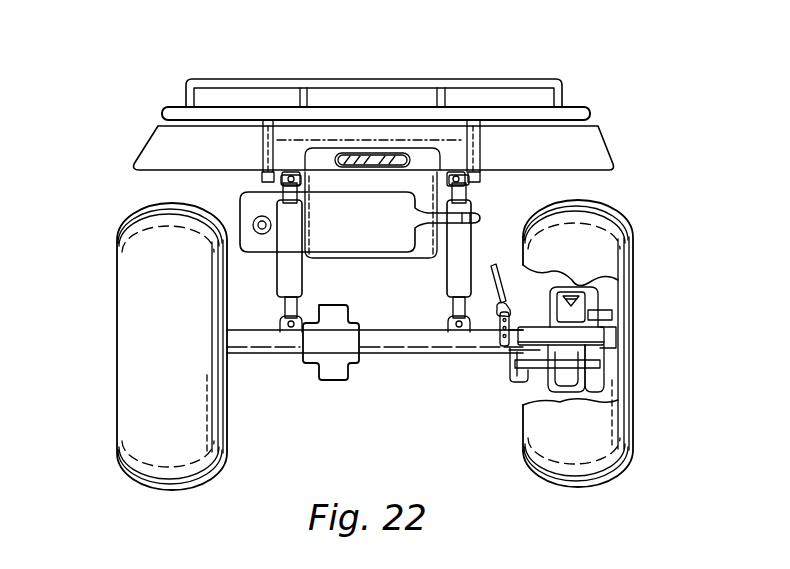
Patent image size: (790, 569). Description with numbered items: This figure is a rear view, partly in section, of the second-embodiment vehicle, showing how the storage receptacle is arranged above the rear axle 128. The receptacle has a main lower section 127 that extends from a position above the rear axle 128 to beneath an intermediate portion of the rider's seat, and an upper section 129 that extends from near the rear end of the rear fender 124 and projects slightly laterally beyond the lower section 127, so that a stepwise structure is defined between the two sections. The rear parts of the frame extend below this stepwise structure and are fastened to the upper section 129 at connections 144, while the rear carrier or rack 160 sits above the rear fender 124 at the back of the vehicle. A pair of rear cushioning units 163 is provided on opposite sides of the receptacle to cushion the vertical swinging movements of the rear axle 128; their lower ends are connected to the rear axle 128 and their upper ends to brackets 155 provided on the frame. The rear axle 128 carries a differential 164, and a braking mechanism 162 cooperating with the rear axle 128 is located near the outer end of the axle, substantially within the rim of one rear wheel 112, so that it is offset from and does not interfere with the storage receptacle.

The rear wheel 112 is at (633, 447).
The rear fender 124 is at (611, 133).
The lower section 127 is at (433, 245).
The rear axle 128 is at (423, 355).
The upper section 129 is at (450, 150).
The connections 144 is at (262, 166).
The brackets 155 is at (258, 186).
The rear carrier 160 is at (585, 103).
The braking mechanism 162 is at (598, 307).
The rear cushioning units 163 is at (283, 272).
The differential 164 is at (322, 352).